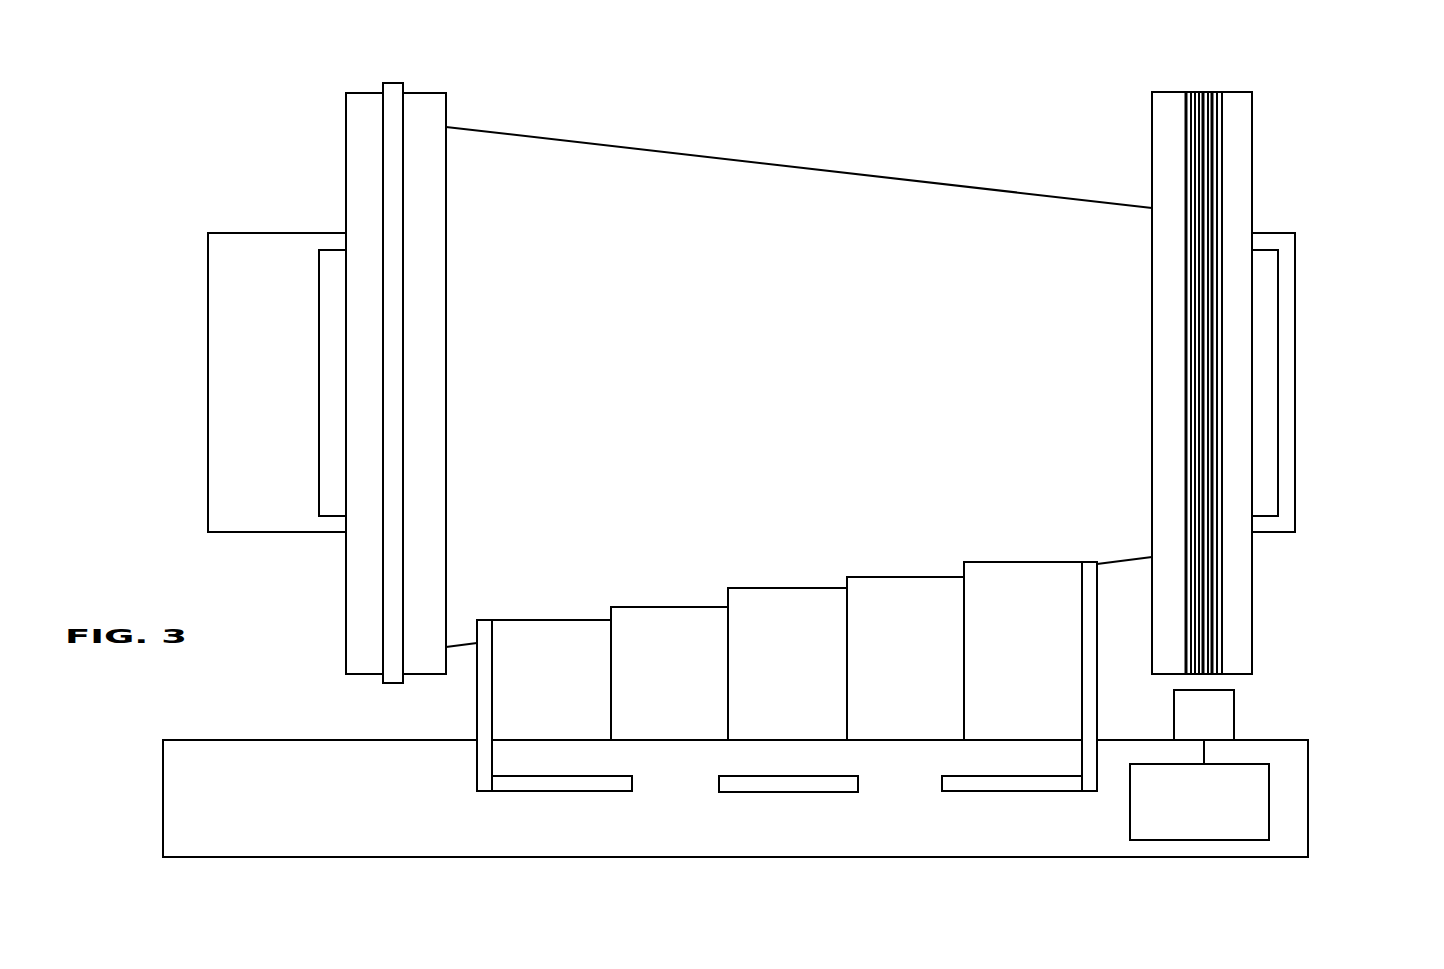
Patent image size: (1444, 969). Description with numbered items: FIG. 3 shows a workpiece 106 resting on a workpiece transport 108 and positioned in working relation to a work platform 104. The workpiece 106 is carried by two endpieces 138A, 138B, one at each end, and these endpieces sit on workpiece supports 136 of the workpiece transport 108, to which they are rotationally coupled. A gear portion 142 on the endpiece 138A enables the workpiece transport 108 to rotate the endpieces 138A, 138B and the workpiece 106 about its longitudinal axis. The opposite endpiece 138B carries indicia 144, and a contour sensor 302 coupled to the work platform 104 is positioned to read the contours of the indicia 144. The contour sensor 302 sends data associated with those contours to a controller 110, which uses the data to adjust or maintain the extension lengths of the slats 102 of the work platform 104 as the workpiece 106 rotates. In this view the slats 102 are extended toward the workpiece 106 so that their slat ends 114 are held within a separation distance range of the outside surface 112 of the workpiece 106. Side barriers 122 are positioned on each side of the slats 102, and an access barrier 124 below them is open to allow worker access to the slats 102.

The slats 102 is at (784, 580).
The work platform 104 is at (735, 798).
The workpiece 106 is at (890, 390).
The workpiece transport 108 is at (690, 351).
The controller 110 is at (1199, 802).
The outside surface 112 is at (722, 158).
The slat ends 114 is at (687, 606).
The side barriers 122 is at (482, 763).
The access barrier 124 is at (817, 786).
The workpiece supports 136 is at (330, 370).
The endpiece 138A is at (425, 260).
The endpiece 138B is at (1235, 147).
The gear portion 142 is at (403, 83).
The indicia 144 is at (1202, 90).
The contour sensor 302 is at (1217, 717).